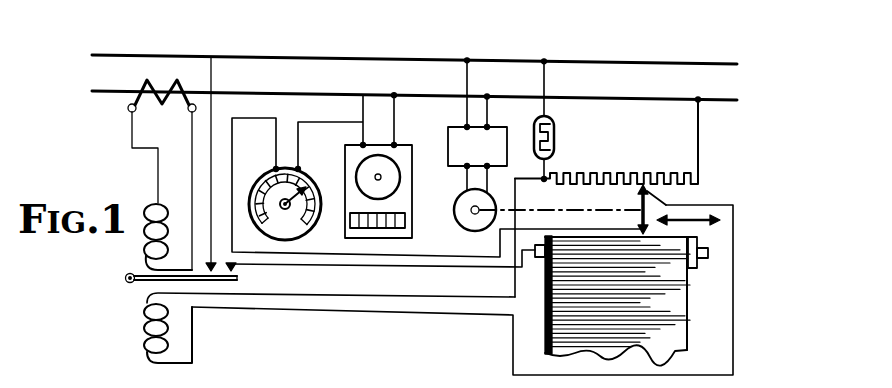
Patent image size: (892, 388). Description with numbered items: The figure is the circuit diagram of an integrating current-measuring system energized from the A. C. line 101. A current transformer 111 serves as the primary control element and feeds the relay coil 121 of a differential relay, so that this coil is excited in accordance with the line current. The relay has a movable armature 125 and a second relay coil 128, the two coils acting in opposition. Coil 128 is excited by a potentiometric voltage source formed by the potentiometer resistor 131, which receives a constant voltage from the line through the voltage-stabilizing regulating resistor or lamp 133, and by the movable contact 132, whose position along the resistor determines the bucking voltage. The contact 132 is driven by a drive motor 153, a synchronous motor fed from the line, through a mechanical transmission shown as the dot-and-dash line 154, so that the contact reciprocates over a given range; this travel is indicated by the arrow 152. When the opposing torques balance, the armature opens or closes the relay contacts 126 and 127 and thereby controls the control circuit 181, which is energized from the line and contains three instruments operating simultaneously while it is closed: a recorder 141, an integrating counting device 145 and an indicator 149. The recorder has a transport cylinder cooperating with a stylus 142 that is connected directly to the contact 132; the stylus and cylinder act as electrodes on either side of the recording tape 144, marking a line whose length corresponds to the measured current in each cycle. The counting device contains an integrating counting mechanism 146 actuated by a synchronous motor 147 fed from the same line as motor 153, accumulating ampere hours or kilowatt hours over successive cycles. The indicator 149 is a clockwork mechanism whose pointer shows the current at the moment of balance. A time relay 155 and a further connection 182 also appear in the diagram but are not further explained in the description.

The A. C. line 101 is at (355, 94).
The current transformer 111 is at (152, 84).
The relay coil 121 is at (143, 250).
The movable armature 125 is at (222, 288).
The relay contact 126 is at (210, 284).
The relay contact 127 is at (238, 275).
The relay coil 128 is at (143, 333).
The potentiometer resistor 131 is at (587, 173).
The movable contact 132 is at (640, 191).
The voltage-stabilizing regulating resistor or lamp 133 is at (557, 127).
The recorder 141 is at (697, 265).
The stylus 142 is at (647, 216).
The recording tape 144 is at (677, 323).
The integrating counting device 145 is at (404, 191).
The integrating counting mechanism 146 is at (403, 223).
The synchronous motor 147 is at (372, 176).
The indicator 149 is at (269, 175).
The direction of movement 152 is at (697, 222).
The drive motor 153 is at (455, 211).
The dot-and-dash line 154 is at (568, 206).
The time relay 155 is at (448, 131).
The control circuit 181 is at (392, 266).
The conductor 182 is at (368, 312).